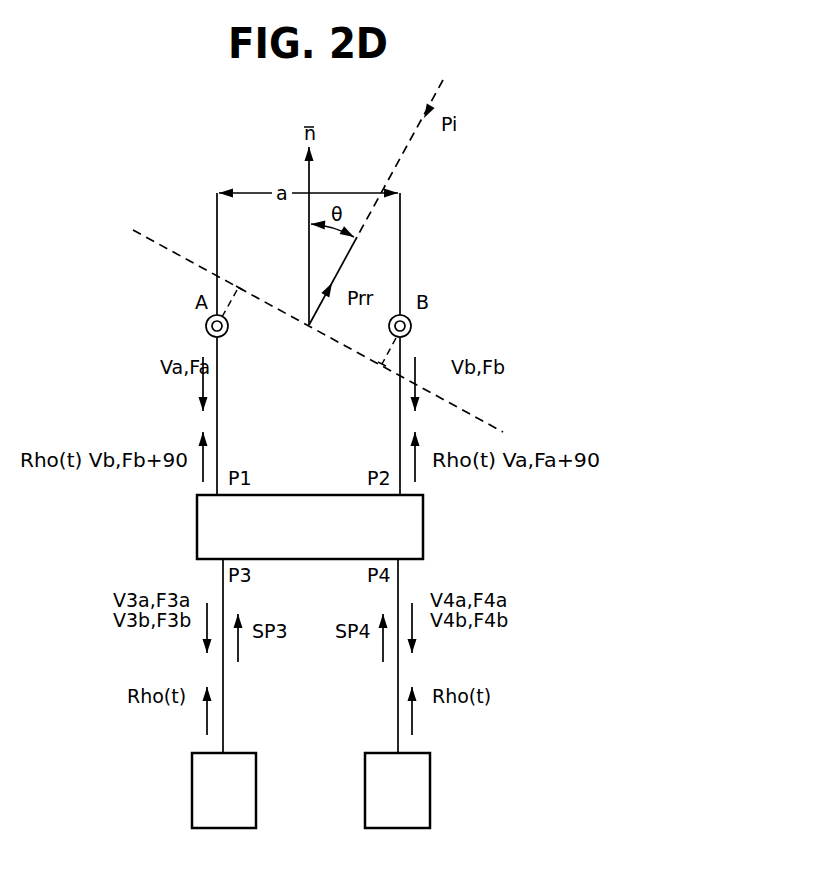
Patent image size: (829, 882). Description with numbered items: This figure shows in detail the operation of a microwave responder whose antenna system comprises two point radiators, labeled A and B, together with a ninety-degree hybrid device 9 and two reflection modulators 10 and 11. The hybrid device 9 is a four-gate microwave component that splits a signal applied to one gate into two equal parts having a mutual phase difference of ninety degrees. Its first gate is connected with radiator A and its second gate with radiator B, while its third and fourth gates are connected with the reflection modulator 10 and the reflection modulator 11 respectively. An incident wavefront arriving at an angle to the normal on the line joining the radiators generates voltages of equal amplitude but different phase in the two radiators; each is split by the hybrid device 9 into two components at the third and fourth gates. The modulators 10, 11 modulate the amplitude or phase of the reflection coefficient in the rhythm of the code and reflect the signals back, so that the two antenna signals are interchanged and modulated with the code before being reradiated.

The 90° hybrid device 9 is at (414, 532).
The reflection modulator 10 is at (206, 794).
The reflection modulator 11 is at (417, 793).